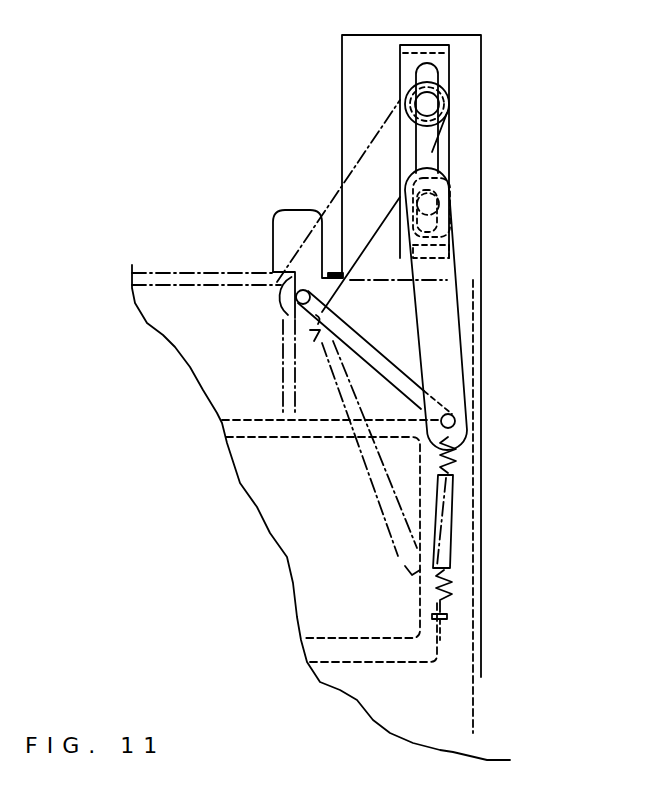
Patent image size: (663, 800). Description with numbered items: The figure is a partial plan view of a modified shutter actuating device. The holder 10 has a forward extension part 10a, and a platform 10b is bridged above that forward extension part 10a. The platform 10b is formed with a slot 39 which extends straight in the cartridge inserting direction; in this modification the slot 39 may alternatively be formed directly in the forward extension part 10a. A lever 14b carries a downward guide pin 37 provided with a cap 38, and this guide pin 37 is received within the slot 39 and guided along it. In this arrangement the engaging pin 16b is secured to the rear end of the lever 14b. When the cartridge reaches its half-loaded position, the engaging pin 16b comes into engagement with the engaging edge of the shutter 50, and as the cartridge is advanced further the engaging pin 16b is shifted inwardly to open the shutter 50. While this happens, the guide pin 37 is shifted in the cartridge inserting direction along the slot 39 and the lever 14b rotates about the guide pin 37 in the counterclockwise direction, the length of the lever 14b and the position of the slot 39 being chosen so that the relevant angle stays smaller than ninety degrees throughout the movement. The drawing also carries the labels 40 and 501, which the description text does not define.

The holder 10 is at (492, 612).
The forward extension part 10a is at (467, 113).
The platform 10b is at (447, 70).
The lever 14b is at (445, 315).
The engaging pin 16b is at (455, 418).
The guide pin 37 is at (453, 190).
The cap 38 is at (460, 225).
The slot 39 is at (437, 160).
The seal line 40 is at (483, 713).
The shutter 50 is at (395, 662).
The damper rod 501 is at (470, 433).